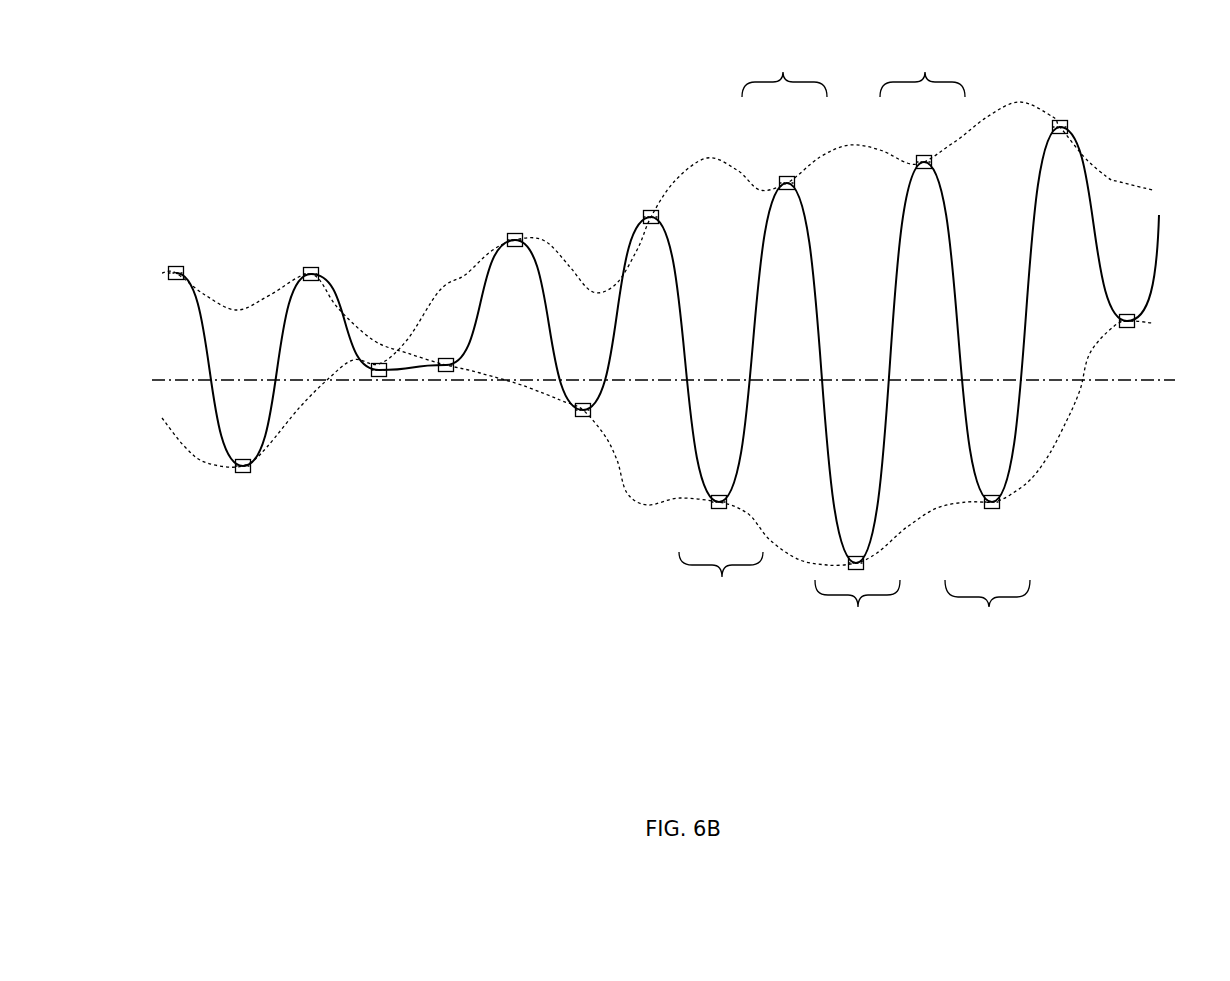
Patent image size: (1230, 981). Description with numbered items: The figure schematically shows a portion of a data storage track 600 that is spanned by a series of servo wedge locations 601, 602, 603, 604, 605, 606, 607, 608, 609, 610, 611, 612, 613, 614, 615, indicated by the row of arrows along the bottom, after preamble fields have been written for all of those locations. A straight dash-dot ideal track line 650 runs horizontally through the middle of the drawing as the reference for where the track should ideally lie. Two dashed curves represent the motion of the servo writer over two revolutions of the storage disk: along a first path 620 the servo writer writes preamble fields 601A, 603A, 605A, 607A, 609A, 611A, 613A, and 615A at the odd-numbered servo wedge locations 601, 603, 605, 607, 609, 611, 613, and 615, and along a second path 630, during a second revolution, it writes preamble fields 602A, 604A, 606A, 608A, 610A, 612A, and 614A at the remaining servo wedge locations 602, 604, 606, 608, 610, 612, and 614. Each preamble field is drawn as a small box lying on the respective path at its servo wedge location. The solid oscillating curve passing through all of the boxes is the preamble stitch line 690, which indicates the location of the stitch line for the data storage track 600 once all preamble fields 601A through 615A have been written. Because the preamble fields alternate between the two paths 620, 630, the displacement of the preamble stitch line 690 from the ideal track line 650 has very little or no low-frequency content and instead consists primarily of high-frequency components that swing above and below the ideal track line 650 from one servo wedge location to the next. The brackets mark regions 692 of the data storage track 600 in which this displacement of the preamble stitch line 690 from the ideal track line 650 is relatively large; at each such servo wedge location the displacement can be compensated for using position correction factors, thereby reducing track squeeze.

The data storage track 600 is at (451, 126).
The servo wedge location 601 is at (175, 677).
The servo wedge location 602 is at (243, 677).
The servo wedge location 603 is at (311, 677).
The servo wedge location 604 is at (378, 677).
The servo wedge location 605 is at (446, 677).
The servo wedge location 606 is at (514, 677).
The servo wedge location 607 is at (582, 677).
The servo wedge location 608 is at (650, 677).
The servo wedge location 609 is at (718, 677).
The servo wedge location 610 is at (786, 677).
The servo wedge location 611 is at (854, 677).
The servo wedge location 612 is at (922, 677).
The servo wedge location 613 is at (990, 677).
The servo wedge location 614 is at (1058, 677).
The servo wedge location 615 is at (1126, 677).
The preamble field 601A is at (176, 266).
The preamble field 602A is at (243, 473).
The preamble field 603A is at (308, 267).
The preamble field 604A is at (379, 377).
The preamble field 605A is at (446, 372).
The preamble field 606A is at (513, 233).
The preamble field 607A is at (583, 417).
The preamble field 608A is at (651, 210).
The preamble field 609A is at (719, 509).
The preamble field 610A is at (787, 176).
The preamble field 611A is at (863, 563).
The preamble field 612A is at (924, 155).
The preamble field 613A is at (992, 509).
The preamble field 614A is at (1060, 120).
The preamble field 615A is at (1128, 329).
The path 620 is at (628, 495).
The path 630 is at (465, 275).
The ideal track line 650 is at (1103, 380).
The preamble stitch line 690 is at (207, 365).
The regions 692 is at (783, 72).